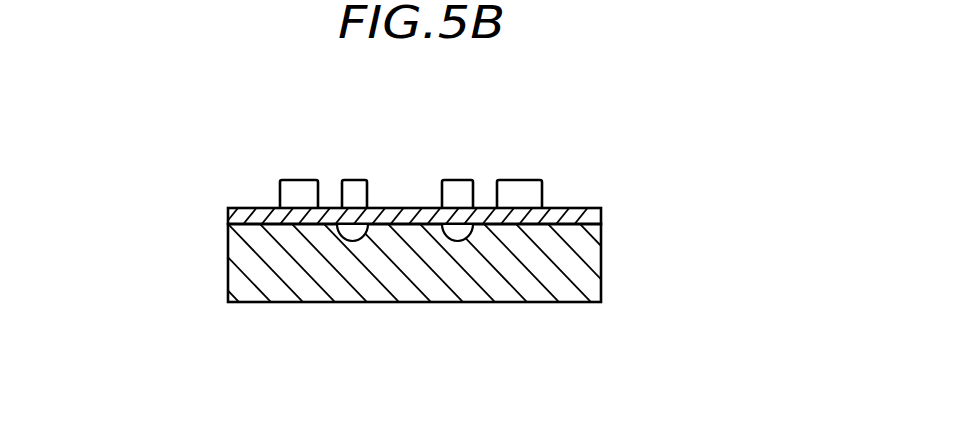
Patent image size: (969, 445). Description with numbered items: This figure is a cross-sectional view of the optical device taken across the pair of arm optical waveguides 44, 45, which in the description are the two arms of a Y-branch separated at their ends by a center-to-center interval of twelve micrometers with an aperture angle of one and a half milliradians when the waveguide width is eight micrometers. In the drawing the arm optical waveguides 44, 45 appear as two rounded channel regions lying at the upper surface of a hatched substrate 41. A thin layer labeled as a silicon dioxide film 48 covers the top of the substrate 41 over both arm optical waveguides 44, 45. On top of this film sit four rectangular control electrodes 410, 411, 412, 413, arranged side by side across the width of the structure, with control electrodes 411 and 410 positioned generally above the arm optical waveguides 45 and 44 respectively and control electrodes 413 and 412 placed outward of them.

The substrate 41 is at (252, 305).
The arm optical waveguide 44 is at (465, 242).
The arm optical waveguide 45 is at (353, 242).
The SiO2 film 48 is at (602, 215).
The control electrode 410 is at (462, 188).
The control electrode 411 is at (353, 191).
The control electrode 412 is at (533, 190).
The control electrode 413 is at (294, 192).